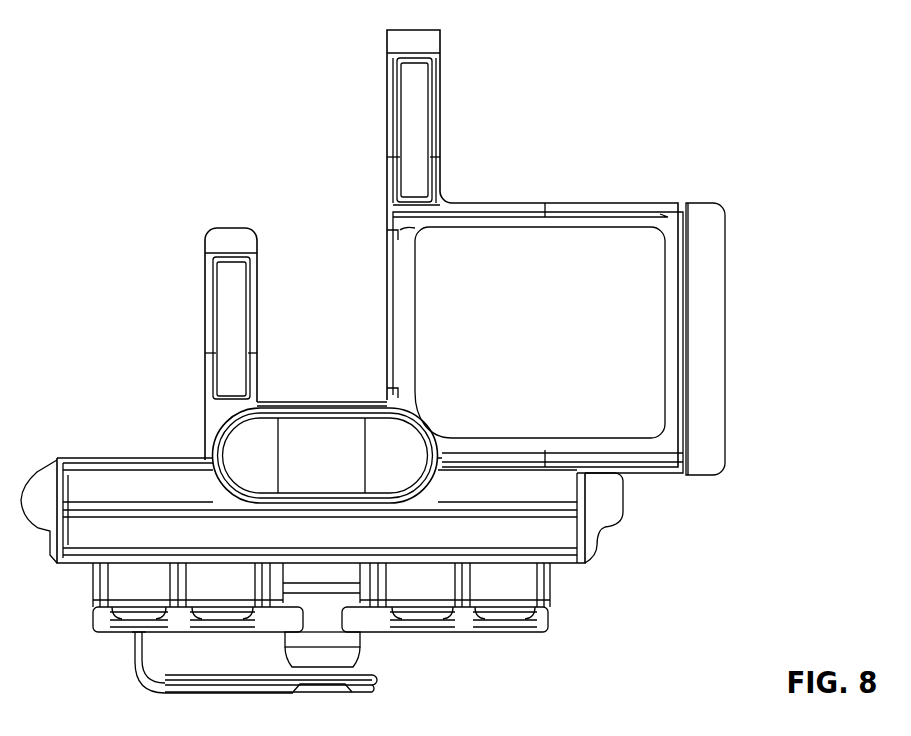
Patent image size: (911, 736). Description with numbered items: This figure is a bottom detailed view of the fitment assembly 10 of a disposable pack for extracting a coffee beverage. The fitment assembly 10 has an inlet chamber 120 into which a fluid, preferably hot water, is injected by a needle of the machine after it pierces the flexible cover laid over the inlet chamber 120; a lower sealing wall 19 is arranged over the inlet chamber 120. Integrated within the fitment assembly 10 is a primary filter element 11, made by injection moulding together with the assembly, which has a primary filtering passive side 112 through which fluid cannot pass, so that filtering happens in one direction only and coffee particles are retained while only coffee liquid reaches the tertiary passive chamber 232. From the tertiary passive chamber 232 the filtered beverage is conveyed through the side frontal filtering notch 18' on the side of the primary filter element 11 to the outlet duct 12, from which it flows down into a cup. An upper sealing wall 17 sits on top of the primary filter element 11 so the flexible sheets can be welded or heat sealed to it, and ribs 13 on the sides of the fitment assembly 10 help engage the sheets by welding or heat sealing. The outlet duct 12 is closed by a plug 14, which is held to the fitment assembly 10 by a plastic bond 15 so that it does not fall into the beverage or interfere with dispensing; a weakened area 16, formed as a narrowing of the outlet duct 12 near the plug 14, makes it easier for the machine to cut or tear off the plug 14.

The fitment assembly 10 is at (698, 130).
The primary filter element 11 is at (675, 278).
The primary filtering passive side 112 is at (640, 377).
The upper sealing wall 17 is at (427, 45).
The lower sealing wall 19 is at (215, 238).
The tertiary passive chamber 232 is at (413, 273).
The side frontal filtering notch 18' is at (352, 314).
The inlet chamber 120 is at (233, 445).
The ribs 13 is at (100, 550).
The outlet duct 12 is at (357, 642).
The weakened area 16 is at (360, 665).
The plug 14 is at (368, 683).
The plastic bond 15 is at (135, 678).